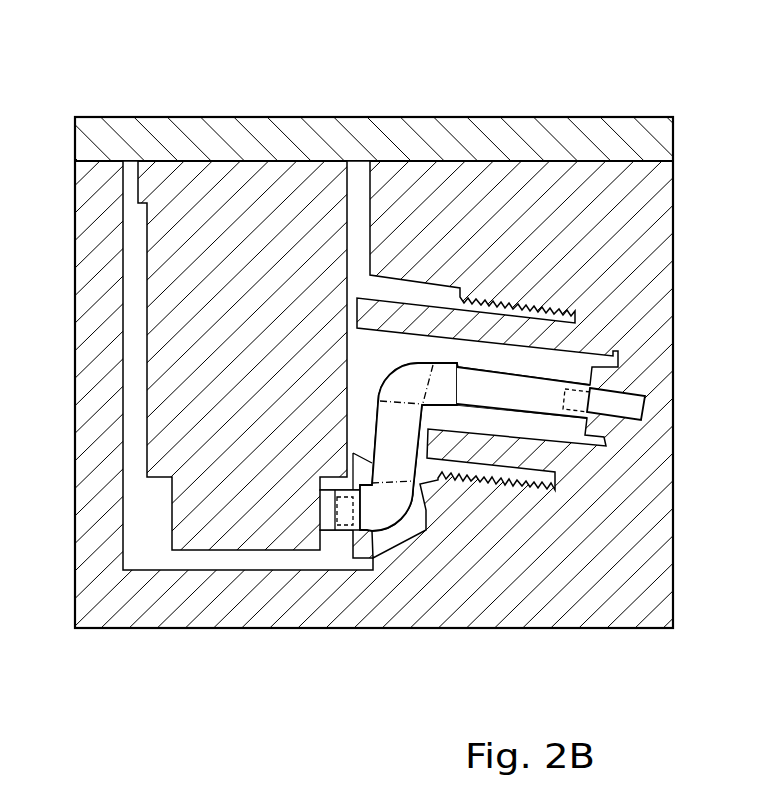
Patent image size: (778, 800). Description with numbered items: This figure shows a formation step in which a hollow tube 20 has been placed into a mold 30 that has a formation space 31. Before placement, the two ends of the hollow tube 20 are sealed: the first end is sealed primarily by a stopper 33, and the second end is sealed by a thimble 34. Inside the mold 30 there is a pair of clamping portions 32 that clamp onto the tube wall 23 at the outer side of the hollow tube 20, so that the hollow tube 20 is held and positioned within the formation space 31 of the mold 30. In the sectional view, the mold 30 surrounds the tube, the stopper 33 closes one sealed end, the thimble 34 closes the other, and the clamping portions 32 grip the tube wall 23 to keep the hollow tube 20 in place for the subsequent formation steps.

The mold 30 is at (255, 117).
The formation space 31 is at (133, 318).
The clamping portions 32 is at (376, 540).
The stopper 33 is at (336, 530).
The hollow tube 20 is at (540, 355).
The tube wall 23 is at (400, 535).
The thimble 34 is at (637, 420).